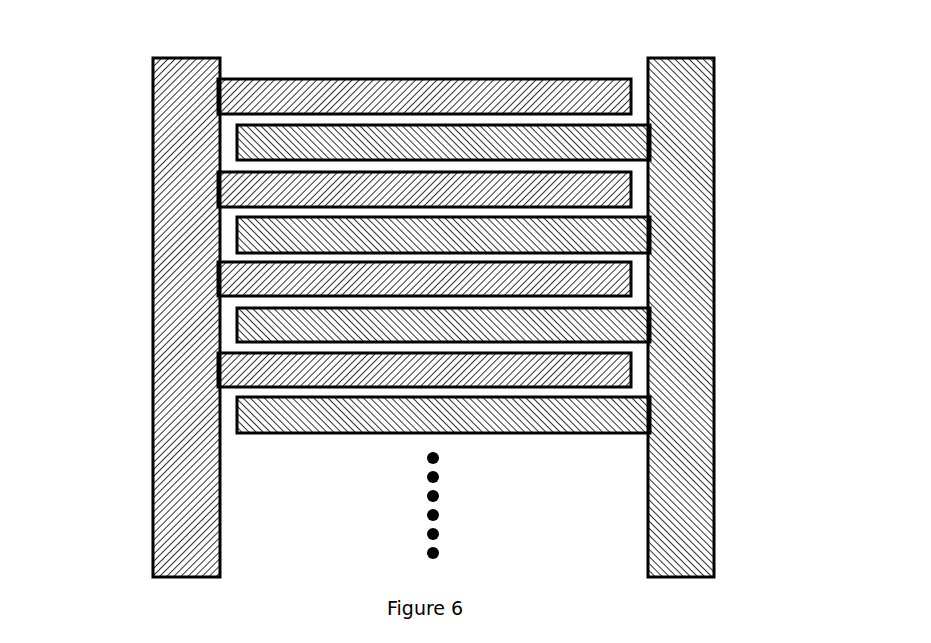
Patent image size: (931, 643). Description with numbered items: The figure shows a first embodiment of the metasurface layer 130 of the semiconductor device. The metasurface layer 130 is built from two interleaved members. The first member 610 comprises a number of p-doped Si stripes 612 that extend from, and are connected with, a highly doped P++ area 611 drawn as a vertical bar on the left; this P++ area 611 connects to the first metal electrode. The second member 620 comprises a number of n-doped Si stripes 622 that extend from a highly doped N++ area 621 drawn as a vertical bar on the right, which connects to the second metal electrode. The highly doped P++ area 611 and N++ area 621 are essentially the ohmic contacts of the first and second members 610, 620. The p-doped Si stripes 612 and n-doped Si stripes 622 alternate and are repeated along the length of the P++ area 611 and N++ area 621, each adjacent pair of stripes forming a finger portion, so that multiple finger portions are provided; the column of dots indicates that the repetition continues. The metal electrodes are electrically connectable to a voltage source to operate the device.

The metasurface layer 130 is at (112, 127).
The first member 610 is at (152, 378).
The highly doped P++ area 611 is at (152, 222).
The p-doped Si stripes 612 is at (480, 80).
The second member 620 is at (713, 273).
The highly doped N++ area 621 is at (712, 427).
The n-doped Si stripes 622 is at (517, 432).